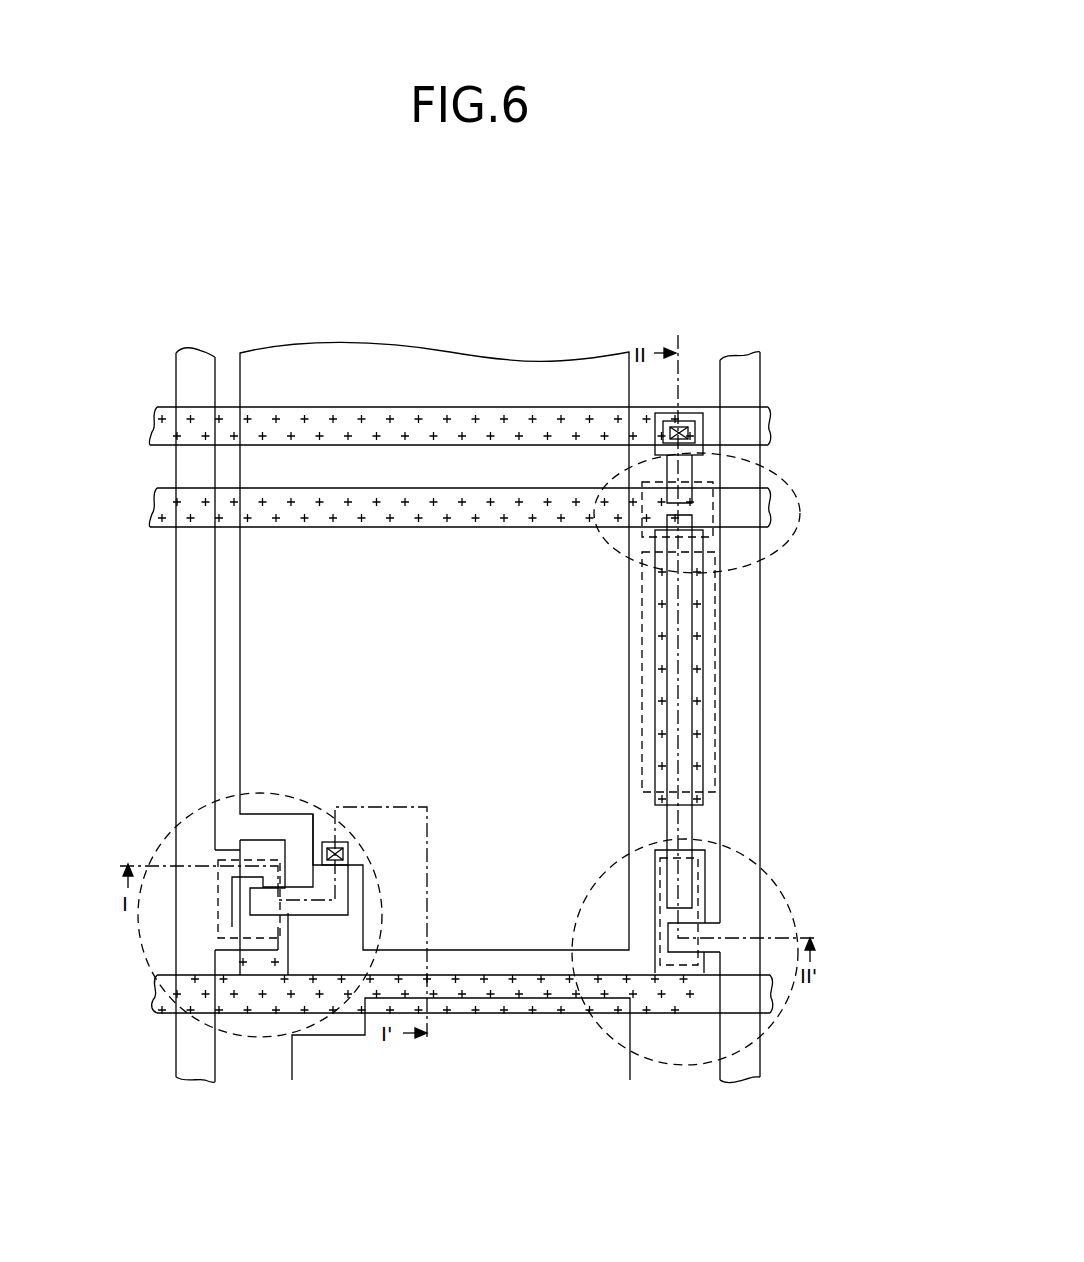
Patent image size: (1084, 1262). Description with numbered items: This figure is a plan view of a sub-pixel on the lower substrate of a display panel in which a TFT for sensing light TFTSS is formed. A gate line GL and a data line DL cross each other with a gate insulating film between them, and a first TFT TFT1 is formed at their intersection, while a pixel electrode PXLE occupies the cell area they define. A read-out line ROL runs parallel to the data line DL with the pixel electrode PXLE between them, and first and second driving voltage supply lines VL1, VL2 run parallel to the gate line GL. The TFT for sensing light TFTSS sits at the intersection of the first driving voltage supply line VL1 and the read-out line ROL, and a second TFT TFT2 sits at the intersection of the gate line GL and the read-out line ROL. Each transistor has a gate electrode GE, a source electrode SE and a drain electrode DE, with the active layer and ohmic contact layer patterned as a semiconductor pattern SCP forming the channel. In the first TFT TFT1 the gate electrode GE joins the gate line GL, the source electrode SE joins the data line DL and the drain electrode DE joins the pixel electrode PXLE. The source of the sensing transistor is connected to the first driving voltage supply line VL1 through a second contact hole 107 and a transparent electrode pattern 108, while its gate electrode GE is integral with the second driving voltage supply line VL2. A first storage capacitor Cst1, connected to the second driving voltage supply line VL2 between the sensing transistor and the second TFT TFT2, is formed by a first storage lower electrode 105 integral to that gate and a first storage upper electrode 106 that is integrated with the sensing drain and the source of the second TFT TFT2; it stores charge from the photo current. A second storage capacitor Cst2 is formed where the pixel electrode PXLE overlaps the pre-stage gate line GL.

The first storage lower electrode 105 is at (337, 845).
The first storage upper electrode 106 is at (695, 708).
The second contact hole 107 is at (680, 426).
The transparent electrode pattern 108 is at (702, 431).
The first driving voltage supply line VL1 is at (155, 421).
The second driving voltage supply line VL2 is at (155, 505).
The data line DL is at (176, 677).
The gate line GL is at (157, 1000).
The gate electrode GE is at (268, 960).
The pixel electrode PXLE is at (331, 582).
The first TFT TFT1 is at (167, 838).
The second TFT TFT2 is at (742, 853).
The TFT for sensing light TFTSS is at (800, 509).
The source electrode SE is at (272, 862).
The drain electrode DE is at (275, 893).
The semiconductor pattern SCP is at (217, 907).
The first storage capacitor Cst1 is at (715, 660).
The second storage capacitor Cst2 is at (513, 1040).
The read-out line ROL is at (750, 778).